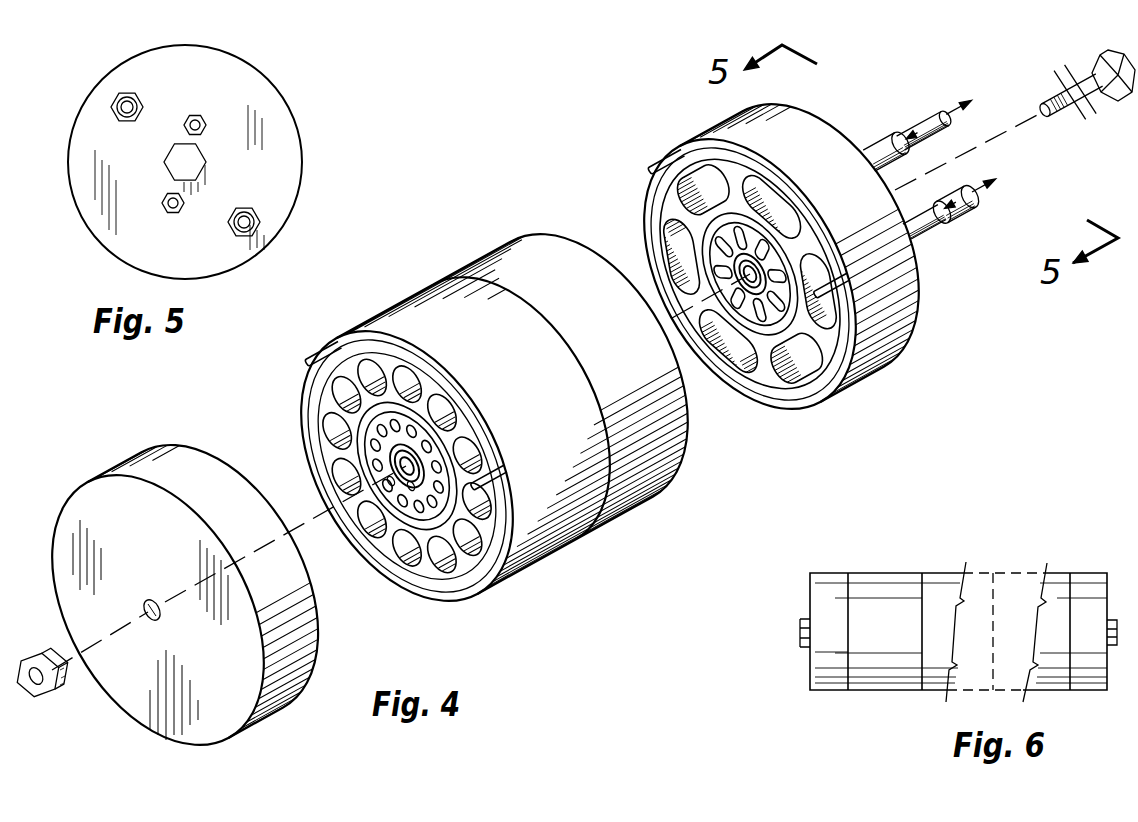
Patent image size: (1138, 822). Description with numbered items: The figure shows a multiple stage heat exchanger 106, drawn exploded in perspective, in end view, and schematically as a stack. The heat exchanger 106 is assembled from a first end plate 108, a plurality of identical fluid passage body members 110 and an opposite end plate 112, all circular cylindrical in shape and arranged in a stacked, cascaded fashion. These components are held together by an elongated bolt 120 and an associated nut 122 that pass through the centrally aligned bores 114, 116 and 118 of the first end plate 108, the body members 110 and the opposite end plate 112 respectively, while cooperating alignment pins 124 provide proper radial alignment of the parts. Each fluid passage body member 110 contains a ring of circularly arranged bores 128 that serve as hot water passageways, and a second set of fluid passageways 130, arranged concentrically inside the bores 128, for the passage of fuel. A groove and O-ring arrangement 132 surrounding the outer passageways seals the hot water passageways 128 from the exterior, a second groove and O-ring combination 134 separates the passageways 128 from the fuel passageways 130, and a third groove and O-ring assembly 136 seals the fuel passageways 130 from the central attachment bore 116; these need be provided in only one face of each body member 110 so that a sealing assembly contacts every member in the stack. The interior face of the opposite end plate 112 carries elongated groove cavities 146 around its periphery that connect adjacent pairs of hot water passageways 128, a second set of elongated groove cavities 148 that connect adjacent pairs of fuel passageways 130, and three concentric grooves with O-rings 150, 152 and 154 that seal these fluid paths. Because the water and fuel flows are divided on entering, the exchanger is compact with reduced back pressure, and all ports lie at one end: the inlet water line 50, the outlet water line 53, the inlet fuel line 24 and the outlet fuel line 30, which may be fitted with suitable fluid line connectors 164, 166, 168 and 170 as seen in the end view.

In FIG. 4, the inlet fuel line 24 is at (930, 231).
In FIG. 4, the outlet fuel line 30 is at (912, 122).
In FIG. 4, the inlet water line 50 is at (870, 148).
In FIG. 4, the outlet water line 53 is at (973, 226).
In FIG. 4, the heat exchanger 106 is at (548, 212).
In FIG. 6, the heat exchanger 106 is at (802, 684).
In FIG. 4, the first end plate 108 is at (52, 543).
In FIG. 6, the first end plate 108 is at (830, 573).
In FIG. 4, the fluid passage body member 110 is at (487, 256).
In FIG. 6, the fluid passage body member 110 is at (1068, 555).
In FIG. 4, the opposite end plate 112 is at (903, 374).
In FIG. 5, the opposite end plate 112 is at (265, 48).
In FIG. 6, the opposite end plate 112 is at (1085, 690).
In FIG. 4, the centrally aligned bore 114 is at (160, 603).
In FIG. 4, the centrally aligned bore 116 is at (412, 455).
In FIG. 4, the centrally aligned bore 118 is at (768, 266).
In FIG. 4, the elongated bolt 120 is at (1073, 72).
In FIG. 4, the nut 122 is at (58, 690).
In FIG. 4, the alignment pin 124 is at (312, 358).
In FIG. 4, the circularly arranged bores 128 is at (337, 430).
In FIG. 4, the fluid passageways 130 is at (412, 488).
In FIG. 4, the groove and O-ring arrangement 132 is at (428, 585).
In FIG. 4, the groove and O-ring combination 134 is at (363, 442).
In FIG. 4, the groove and O-ring assembly 136 is at (413, 432).
In FIG. 4, the elongated groove cavities 146 is at (762, 386).
In FIG. 4, the elongated groove cavities 148 is at (802, 385).
In FIG. 4, the concentric groove and O-ring 150 is at (662, 243).
In FIG. 4, the concentric groove and O-ring 152 is at (727, 216).
In FIG. 4, the concentric groove and O-ring 154 is at (775, 232).
In FIG. 5, the fluid line connector 164 is at (112, 98).
In FIG. 5, the fluid line connector 166 is at (245, 205).
In FIG. 5, the fluid line connector 168 is at (168, 214).
In FIG. 5, the fluid line connector 170 is at (199, 112).